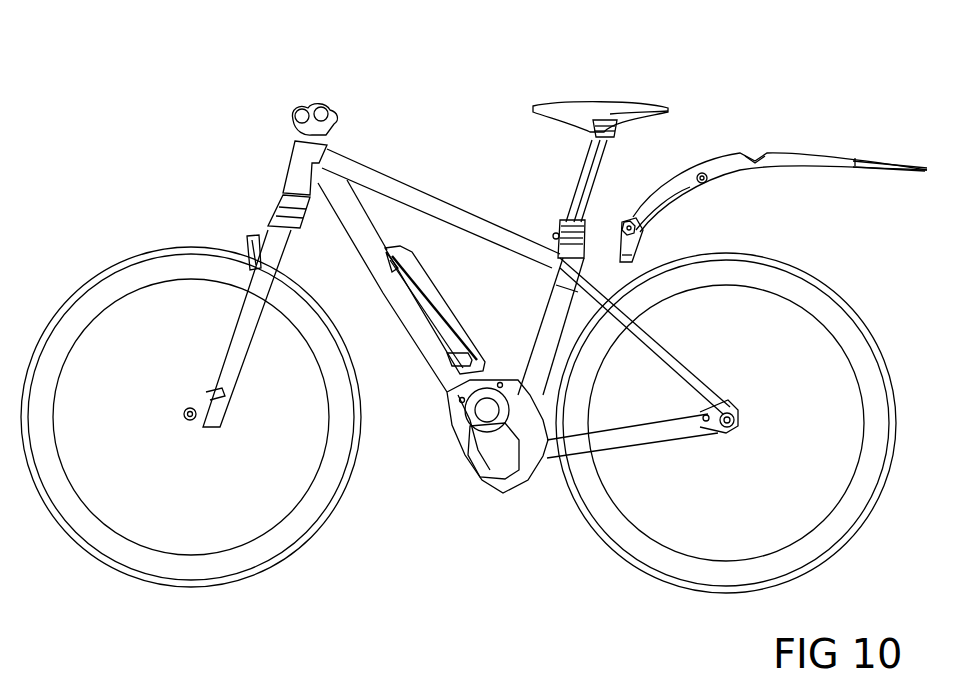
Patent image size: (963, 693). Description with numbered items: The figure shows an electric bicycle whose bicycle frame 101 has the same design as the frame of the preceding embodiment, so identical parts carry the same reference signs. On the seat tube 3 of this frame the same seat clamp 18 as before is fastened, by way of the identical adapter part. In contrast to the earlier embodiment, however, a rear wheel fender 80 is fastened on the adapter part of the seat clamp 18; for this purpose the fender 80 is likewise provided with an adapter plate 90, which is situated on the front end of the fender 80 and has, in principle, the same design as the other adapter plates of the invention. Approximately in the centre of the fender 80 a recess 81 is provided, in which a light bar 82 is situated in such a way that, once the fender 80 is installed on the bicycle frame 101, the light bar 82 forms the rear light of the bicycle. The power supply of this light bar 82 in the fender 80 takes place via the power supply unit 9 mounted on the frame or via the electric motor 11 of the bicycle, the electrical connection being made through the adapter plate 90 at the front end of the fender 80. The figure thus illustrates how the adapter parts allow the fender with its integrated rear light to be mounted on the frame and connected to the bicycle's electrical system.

The bicycle frame 101 is at (448, 128).
The seat tube 3 is at (533, 367).
The seat clamp 18 is at (556, 226).
The power supply unit 9 is at (428, 310).
The electric motor 11 is at (497, 453).
The rear wheel fender 80 is at (773, 125).
The recess 81 is at (838, 130).
The light bar 82 is at (755, 160).
The adapter plate 90 is at (647, 251).